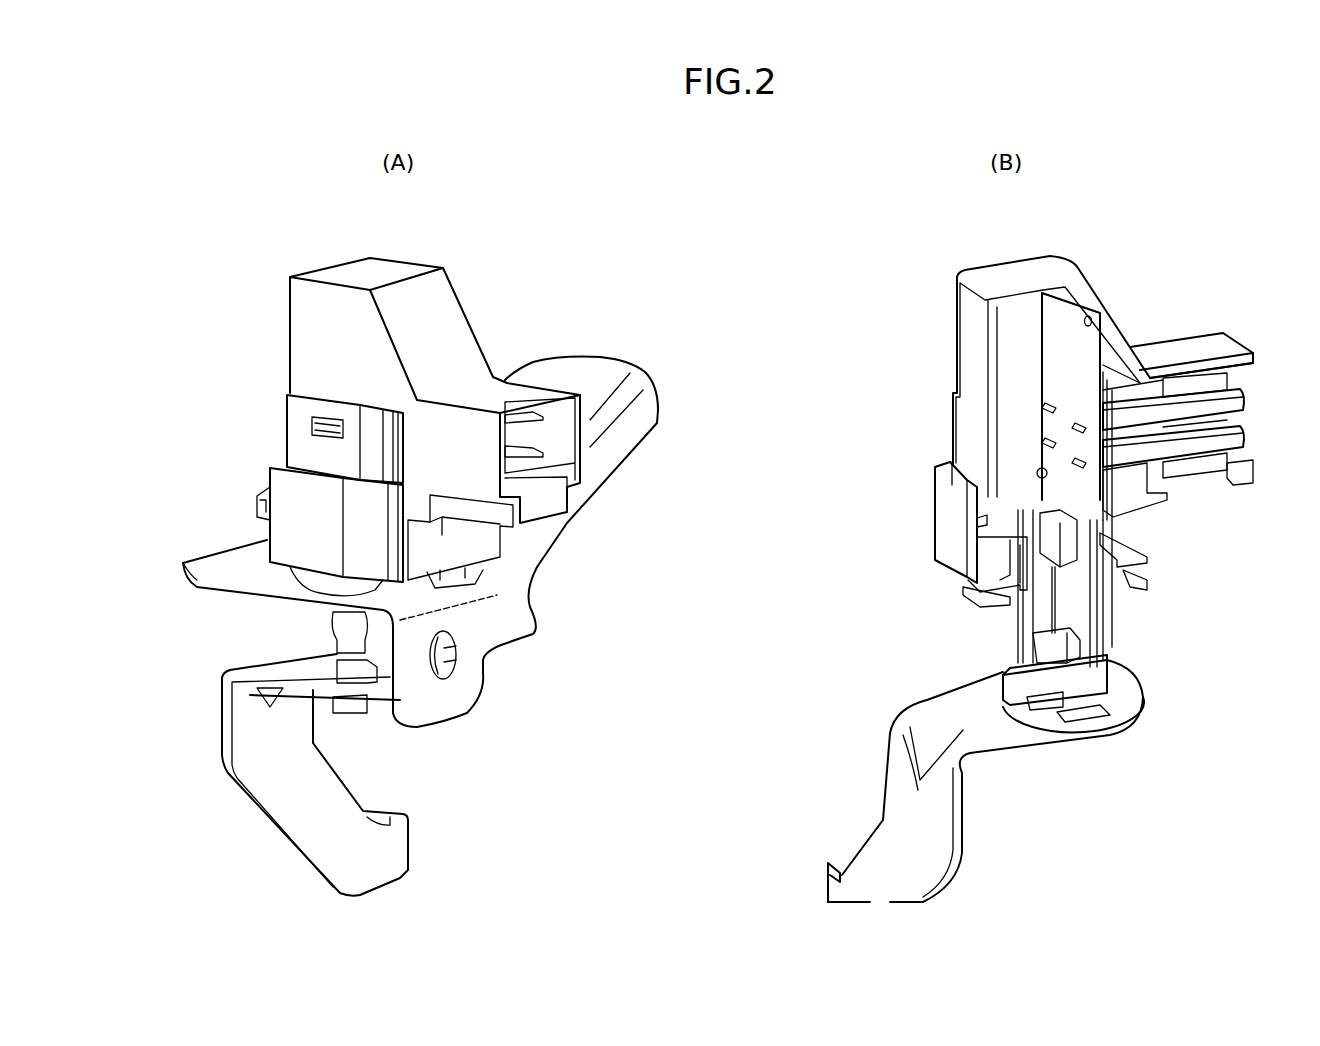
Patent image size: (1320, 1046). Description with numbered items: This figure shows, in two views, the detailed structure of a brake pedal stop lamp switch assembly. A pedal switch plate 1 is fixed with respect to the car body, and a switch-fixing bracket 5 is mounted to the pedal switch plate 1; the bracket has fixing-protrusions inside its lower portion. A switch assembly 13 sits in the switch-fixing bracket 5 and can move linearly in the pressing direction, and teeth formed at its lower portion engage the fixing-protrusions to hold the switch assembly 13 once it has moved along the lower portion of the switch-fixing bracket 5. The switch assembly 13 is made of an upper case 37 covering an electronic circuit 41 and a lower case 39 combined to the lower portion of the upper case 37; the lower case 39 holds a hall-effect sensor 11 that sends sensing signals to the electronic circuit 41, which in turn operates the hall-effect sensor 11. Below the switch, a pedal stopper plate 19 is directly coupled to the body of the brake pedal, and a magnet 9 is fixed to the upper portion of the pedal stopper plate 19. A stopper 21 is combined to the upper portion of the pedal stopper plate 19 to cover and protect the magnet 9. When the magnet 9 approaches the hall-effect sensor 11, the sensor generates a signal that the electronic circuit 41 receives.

The pedal switch plate 1 is at (502, 613).
The switch-fixing bracket 5 is at (355, 545).
The magnet 9 is at (1067, 702).
The hall-effect sensor 11 is at (1078, 646).
The switch assembly 13 is at (770, 429).
The pedal stopper plate 19 is at (393, 850).
The stopper 21 is at (350, 673).
The upper case 37 is at (467, 325).
The lower case 39 is at (435, 530).
The electronic circuit 41 is at (1050, 341).